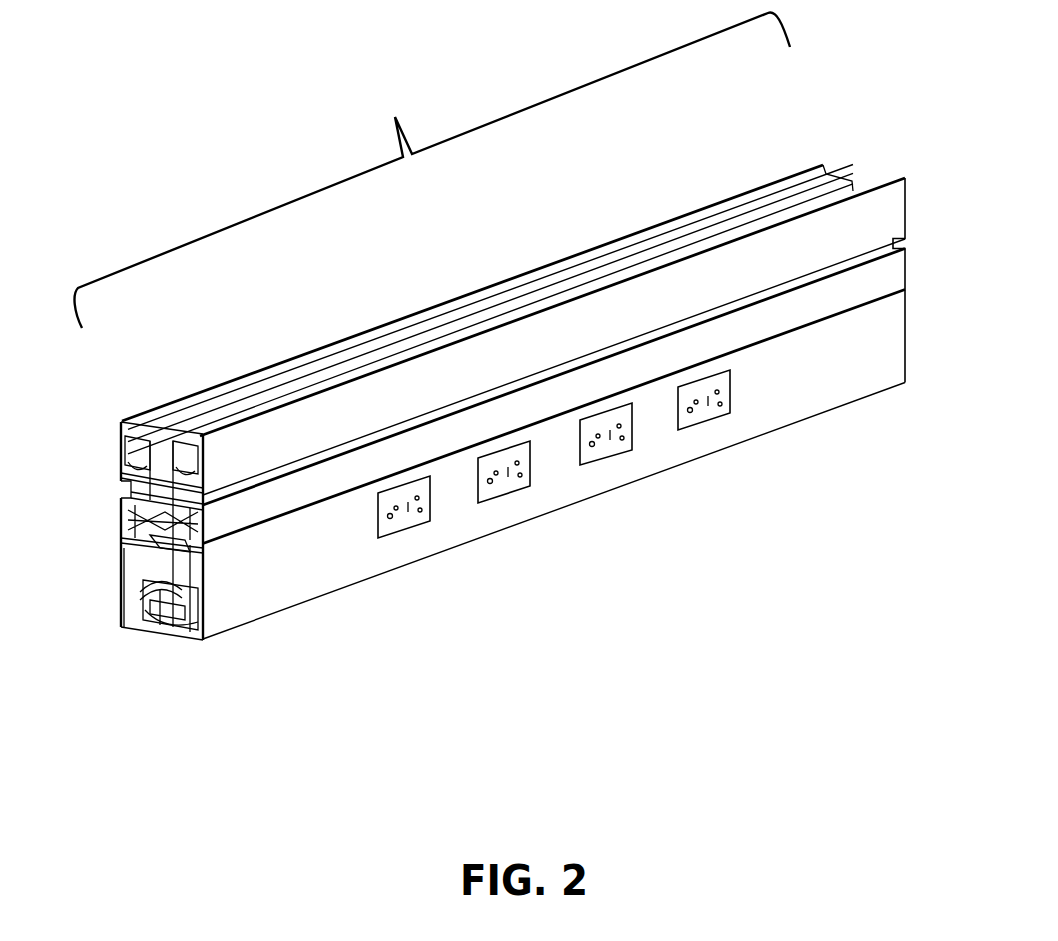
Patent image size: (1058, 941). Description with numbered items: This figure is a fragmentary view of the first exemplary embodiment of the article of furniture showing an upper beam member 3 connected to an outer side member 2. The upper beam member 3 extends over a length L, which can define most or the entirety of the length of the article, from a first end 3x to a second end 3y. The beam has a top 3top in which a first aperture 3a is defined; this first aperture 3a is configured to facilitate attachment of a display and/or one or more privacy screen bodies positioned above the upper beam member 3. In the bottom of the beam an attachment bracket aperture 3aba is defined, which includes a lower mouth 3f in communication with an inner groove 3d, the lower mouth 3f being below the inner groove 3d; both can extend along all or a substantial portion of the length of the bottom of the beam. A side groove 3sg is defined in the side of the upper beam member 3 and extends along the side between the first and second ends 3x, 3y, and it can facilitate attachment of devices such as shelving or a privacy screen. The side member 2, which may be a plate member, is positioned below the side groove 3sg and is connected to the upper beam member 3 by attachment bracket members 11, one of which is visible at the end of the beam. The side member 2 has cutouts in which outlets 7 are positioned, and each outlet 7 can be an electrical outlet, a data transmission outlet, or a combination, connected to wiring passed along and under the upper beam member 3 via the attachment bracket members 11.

The length L is at (432, 170).
The upper beam member 3 is at (513, 252).
The top 3top is at (329, 347).
The first aperture 3a is at (782, 205).
The second end 3y is at (903, 197).
The first end 3x is at (120, 455).
The side groove 3sg is at (120, 488).
The inner groove 3d is at (164, 510).
The lower mouth 3f is at (158, 545).
The attachment bracket aperture 3aba is at (178, 553).
The side member 2 is at (130, 565).
The attachment bracket member 11 is at (188, 650).
The outlet 7 is at (554, 454).